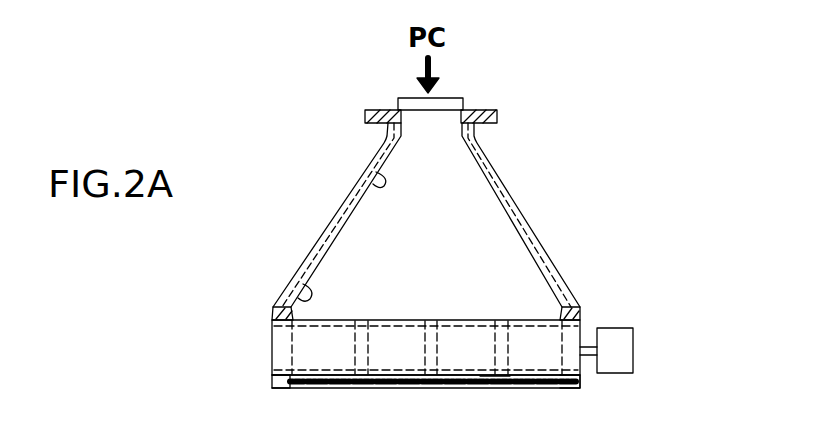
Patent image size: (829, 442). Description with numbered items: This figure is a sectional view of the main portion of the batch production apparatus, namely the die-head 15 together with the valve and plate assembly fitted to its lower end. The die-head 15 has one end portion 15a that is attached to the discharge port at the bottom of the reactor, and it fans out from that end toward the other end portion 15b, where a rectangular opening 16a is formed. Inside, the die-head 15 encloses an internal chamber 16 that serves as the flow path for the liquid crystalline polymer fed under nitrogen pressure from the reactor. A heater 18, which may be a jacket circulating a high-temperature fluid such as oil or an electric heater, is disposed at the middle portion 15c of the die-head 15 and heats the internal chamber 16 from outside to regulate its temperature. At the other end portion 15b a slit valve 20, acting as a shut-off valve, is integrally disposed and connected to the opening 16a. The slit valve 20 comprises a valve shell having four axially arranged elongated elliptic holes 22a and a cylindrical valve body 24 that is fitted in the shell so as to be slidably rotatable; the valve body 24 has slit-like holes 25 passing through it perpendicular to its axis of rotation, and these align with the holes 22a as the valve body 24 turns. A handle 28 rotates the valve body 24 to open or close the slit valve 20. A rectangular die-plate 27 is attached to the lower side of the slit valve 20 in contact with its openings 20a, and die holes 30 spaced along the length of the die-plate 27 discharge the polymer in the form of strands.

The die-head 15 is at (512, 170).
The one end portion 15a is at (383, 110).
The other end portion 15b is at (272, 315).
The middle portion 15c is at (328, 220).
The internal chamber 16 is at (373, 171).
The rectangular opening 16a is at (300, 282).
The heater 18 is at (522, 220).
The slit valve 20 is at (587, 319).
The openings of the slit valve 20a is at (306, 389).
The elongated elliptic holes 22a is at (493, 378).
The valve body 24 is at (270, 352).
The slit-like holes 25 is at (369, 336).
The die-plate 27 is at (567, 390).
The handle 28 is at (633, 345).
The die holes 30 is at (328, 389).